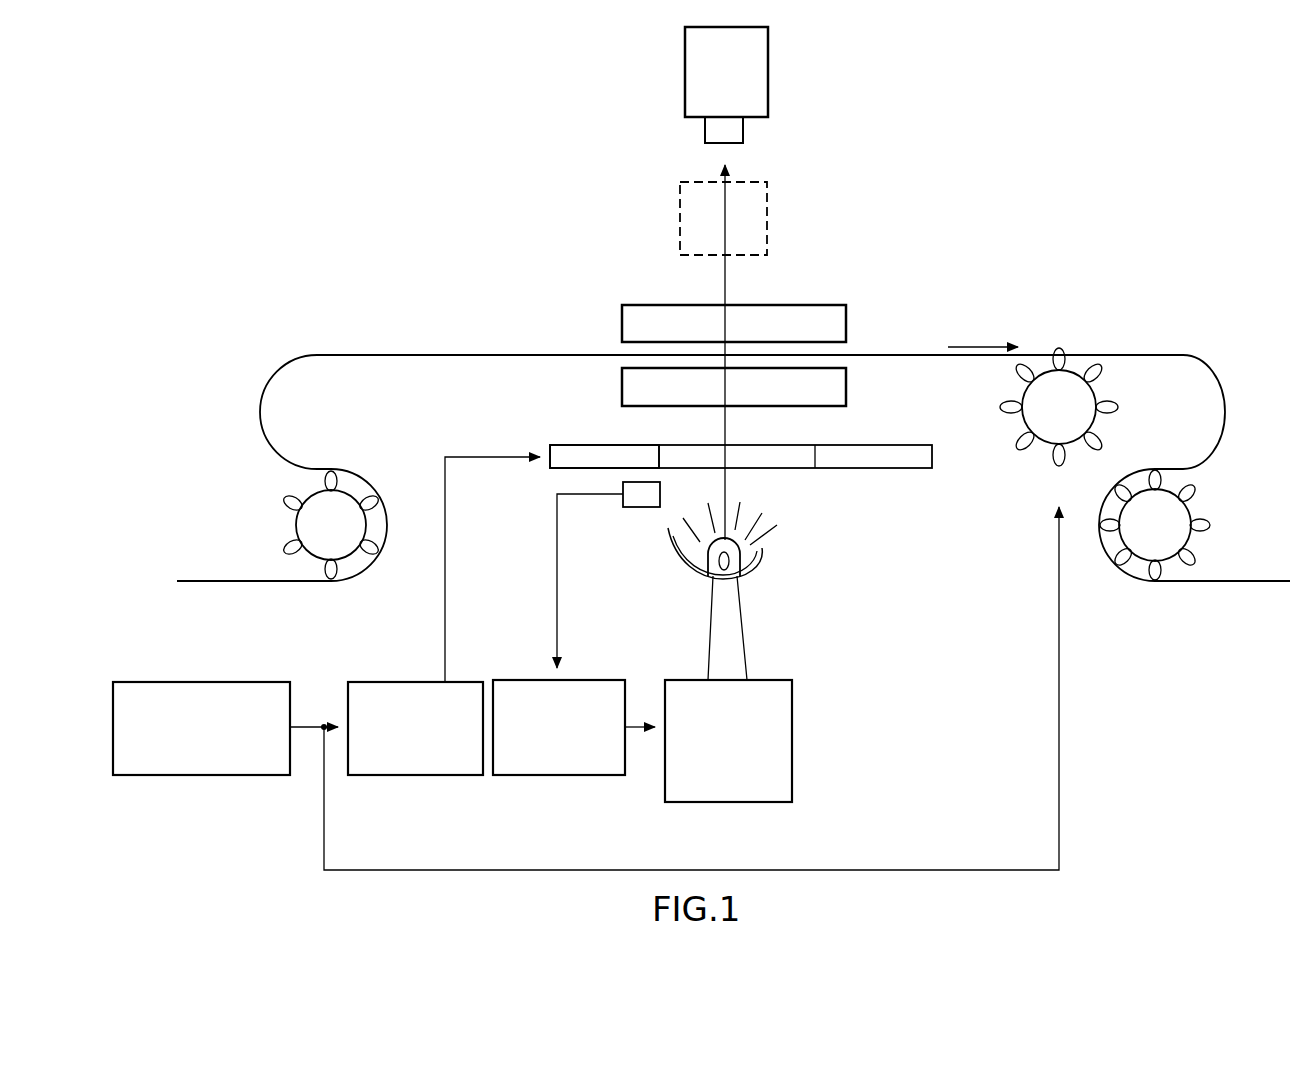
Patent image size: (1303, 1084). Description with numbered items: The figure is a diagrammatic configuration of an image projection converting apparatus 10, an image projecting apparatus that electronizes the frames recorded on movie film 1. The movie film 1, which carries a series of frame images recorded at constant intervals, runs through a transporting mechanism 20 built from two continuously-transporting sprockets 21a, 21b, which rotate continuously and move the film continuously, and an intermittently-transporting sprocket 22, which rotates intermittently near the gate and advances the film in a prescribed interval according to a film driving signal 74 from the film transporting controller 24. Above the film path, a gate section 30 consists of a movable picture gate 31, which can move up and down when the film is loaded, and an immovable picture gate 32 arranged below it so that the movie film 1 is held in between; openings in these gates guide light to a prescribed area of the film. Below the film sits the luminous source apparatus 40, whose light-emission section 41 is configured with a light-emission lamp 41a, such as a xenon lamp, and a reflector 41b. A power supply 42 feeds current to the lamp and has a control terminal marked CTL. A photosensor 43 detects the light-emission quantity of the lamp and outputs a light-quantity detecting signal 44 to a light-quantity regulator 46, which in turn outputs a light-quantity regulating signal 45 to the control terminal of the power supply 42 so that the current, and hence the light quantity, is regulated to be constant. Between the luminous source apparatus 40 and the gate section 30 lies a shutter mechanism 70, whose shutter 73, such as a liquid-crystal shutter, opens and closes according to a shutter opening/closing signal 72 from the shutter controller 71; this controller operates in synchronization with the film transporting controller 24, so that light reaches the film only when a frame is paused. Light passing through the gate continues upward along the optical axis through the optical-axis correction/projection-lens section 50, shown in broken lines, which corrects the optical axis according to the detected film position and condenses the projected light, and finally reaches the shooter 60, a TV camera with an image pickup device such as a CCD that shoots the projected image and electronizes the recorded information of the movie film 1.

The image projection converting apparatus 10 is at (205, 170).
The movie film 1 is at (378, 354).
The transporting mechanism 20 is at (270, 357).
The continuously-transporting sprocket 21a is at (325, 532).
The continuously-transporting sprocket 21b is at (1178, 528).
The intermittently-transporting sprocket 22 is at (1087, 412).
The film transporting controller 24 is at (222, 682).
The gate section 30 is at (947, 256).
The movable picture gate 31 is at (846, 320).
The immovable picture gate 32 is at (846, 382).
The luminous source apparatus 40 is at (927, 498).
The light-emission section 41 is at (856, 527).
The light-emission lamp 41a is at (757, 550).
The reflector 41b is at (753, 562).
The power supply 42 is at (793, 717).
The photosensor 43 is at (638, 507).
The light-quantity detecting signal 44 is at (557, 605).
The light-quantity regulating signal 45 is at (645, 730).
The light-quantity regulator 46 is at (551, 775).
The optical-axis correction/projection-lens section 50 is at (773, 215).
The shooter 60 is at (768, 93).
The shutter mechanism 70 is at (858, 440).
The shutter controller 71 is at (397, 682).
The shutter opening/closing signal 72 is at (445, 578).
The shutter 73 is at (672, 442).
The film driving signal 74 is at (303, 732).